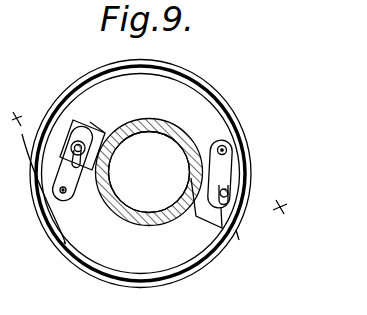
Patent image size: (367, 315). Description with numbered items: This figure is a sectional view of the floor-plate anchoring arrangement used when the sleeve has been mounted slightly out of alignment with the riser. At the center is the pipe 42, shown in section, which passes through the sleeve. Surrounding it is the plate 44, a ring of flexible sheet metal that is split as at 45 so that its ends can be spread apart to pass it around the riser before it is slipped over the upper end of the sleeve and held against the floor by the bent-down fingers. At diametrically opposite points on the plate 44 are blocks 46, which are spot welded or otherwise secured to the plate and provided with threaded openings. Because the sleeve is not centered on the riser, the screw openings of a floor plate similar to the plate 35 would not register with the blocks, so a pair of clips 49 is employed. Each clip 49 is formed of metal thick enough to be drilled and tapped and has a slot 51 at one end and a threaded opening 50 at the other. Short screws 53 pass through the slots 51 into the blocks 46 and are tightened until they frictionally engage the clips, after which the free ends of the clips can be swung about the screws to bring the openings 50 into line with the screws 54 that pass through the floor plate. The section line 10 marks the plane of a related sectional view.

The section line 10- 10 is at (154, 161).
The plate 35 is at (223, 99).
The pipe 42 is at (172, 215).
The plate 44 is at (150, 266).
The split 45 is at (158, 117).
The blocks 46 is at (239, 237).
The clips 49 is at (46, 129).
The threaded opening 50 is at (62, 192).
The slot 51 is at (72, 136).
The short screws 53 is at (84, 115).
The screws 54 is at (66, 191).